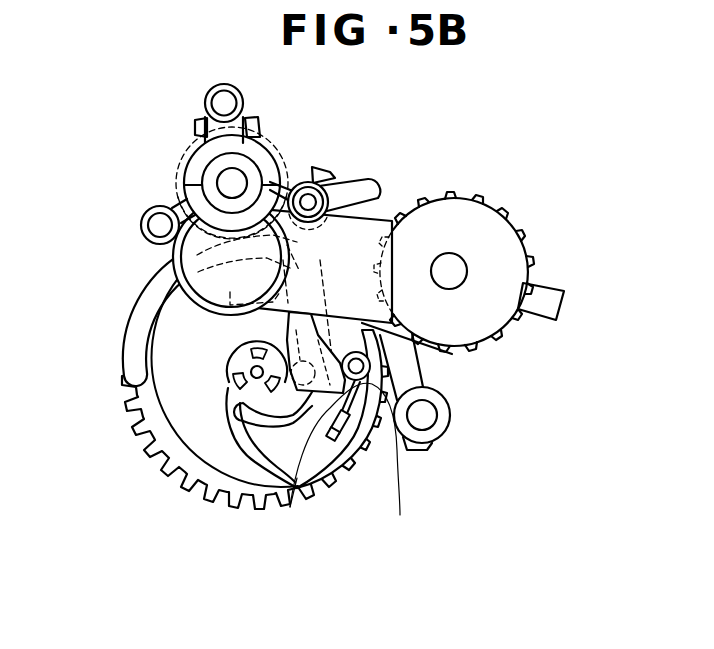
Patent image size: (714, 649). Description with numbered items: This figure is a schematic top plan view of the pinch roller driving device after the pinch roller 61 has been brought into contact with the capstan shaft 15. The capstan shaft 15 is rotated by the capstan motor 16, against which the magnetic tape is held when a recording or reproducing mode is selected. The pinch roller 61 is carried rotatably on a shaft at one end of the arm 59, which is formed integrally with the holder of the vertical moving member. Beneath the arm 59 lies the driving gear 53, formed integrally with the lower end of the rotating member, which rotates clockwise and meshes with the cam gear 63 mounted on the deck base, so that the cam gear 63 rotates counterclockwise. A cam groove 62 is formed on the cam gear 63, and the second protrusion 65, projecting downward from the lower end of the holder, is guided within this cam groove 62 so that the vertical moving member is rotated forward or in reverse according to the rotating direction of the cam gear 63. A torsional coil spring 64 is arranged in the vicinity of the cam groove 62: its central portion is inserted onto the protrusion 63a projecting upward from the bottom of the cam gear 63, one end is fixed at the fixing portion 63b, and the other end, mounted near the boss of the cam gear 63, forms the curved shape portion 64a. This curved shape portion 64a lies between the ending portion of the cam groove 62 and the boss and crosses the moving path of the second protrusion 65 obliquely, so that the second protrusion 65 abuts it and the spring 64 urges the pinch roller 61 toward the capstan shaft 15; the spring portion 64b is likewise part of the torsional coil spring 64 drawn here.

The capstan shaft 15 is at (235, 182).
The capstan motor 16 is at (177, 162).
The driving gear 53 is at (527, 243).
The arm 59 is at (367, 227).
The pinch roller 61 is at (177, 252).
The cam groove 62 is at (287, 327).
The cam gear 63 is at (160, 463).
The protrusion 63a is at (370, 366).
The fixing portion 63b is at (352, 430).
The torsional coil spring 64 is at (400, 510).
The curved shape portion 64a is at (300, 386).
The pawl tail 64b is at (290, 507).
The second protrusion 65 is at (243, 403).